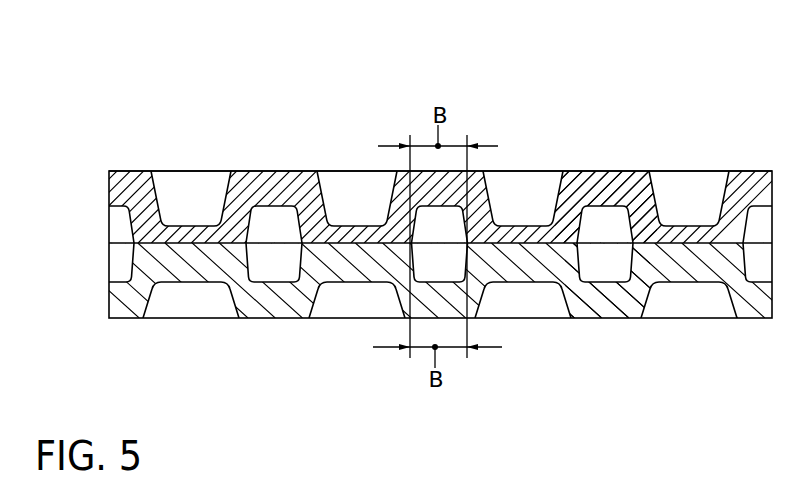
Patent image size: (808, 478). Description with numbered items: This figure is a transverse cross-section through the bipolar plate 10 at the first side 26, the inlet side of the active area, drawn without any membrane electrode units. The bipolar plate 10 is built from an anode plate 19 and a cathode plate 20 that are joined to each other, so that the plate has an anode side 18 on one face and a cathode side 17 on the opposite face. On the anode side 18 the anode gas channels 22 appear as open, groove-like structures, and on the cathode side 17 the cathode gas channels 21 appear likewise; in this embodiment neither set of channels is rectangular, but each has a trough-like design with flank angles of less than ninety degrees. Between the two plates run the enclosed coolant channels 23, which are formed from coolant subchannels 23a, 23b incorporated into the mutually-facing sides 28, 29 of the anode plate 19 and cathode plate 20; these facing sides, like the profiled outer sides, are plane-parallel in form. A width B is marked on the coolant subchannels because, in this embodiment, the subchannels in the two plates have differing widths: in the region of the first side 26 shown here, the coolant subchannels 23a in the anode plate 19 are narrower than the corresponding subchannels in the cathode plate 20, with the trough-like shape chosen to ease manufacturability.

The bipolar plate 10 is at (404, 207).
The cathode side 17 is at (432, 320).
The anode side 18 is at (399, 179).
The anode plate 19 is at (608, 180).
The cathode plate 20 is at (588, 302).
The cathode gas channels 21 is at (184, 307).
The anode gas channels 22 is at (178, 182).
The coolant channels 23 is at (268, 218).
The coolant subchannel 23a is at (595, 222).
The coolant subchannel 23b is at (610, 265).
The first side 26 is at (378, 98).
The mutually-facing side 28 is at (210, 243).
The mutually-facing side 29 is at (152, 250).